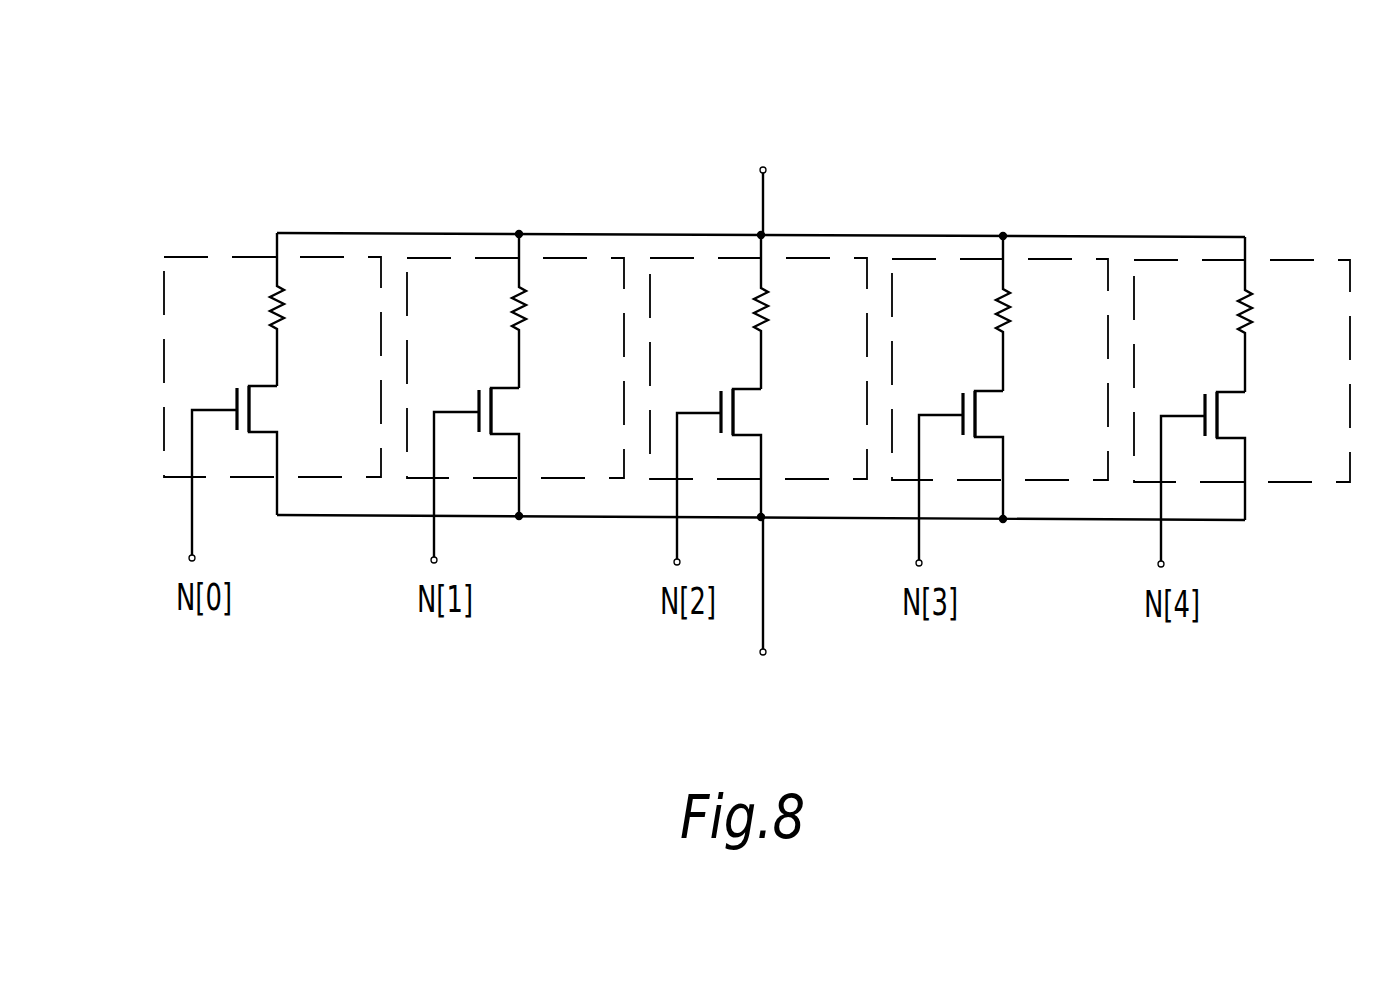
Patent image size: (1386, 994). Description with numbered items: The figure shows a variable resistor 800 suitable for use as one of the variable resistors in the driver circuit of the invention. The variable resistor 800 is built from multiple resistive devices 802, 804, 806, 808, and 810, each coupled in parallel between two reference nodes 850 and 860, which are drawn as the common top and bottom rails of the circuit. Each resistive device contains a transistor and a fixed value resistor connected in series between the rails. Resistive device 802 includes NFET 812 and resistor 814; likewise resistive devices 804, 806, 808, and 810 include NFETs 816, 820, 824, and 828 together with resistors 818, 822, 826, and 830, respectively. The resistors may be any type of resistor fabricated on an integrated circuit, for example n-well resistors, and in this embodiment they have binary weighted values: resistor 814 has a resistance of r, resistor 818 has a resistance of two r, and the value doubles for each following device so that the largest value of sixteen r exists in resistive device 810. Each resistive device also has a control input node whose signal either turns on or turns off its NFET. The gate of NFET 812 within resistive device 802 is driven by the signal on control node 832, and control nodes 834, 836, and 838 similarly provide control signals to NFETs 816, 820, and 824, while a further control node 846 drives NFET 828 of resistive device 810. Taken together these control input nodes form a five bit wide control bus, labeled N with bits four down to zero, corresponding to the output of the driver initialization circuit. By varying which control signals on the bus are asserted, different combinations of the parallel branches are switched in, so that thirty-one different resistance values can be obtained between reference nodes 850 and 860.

The variable resistor 800 is at (1182, 118).
The resistive device 802 is at (332, 257).
The resistive device 804 is at (571, 258).
The resistive device 806 is at (813, 258).
The resistive device 808 is at (1054, 259).
The resistive device 810 is at (1296, 260).
The NFET 812 is at (251, 416).
The resistor 814 is at (271, 314).
The NFET 816 is at (493, 418).
The resistor 818 is at (514, 315).
The NFET 820 is at (735, 419).
The resistor 822 is at (756, 316).
The NFET 824 is at (977, 421).
The resistor 826 is at (998, 317).
The NFET 828 is at (1219, 422).
The resistor 830 is at (1240, 318).
The control node 832 is at (193, 538).
The control node 834 is at (435, 540).
The control node 836 is at (676, 546).
The control node 838 is at (920, 541).
The control input N[4] 846 is at (1162, 542).
The reference node 850 is at (766, 167).
The reference node 860 is at (764, 656).